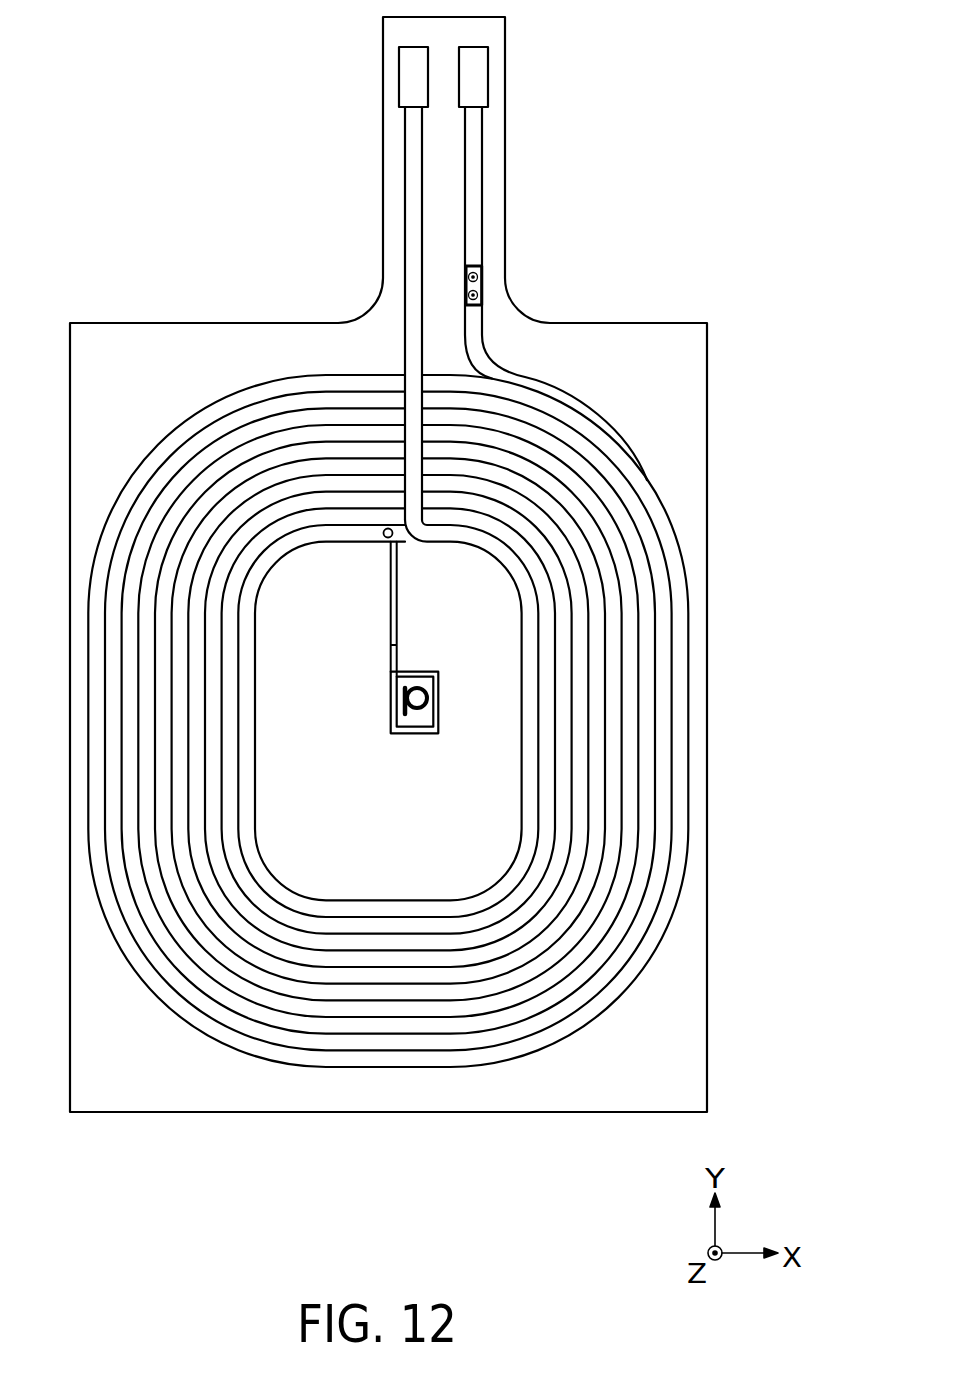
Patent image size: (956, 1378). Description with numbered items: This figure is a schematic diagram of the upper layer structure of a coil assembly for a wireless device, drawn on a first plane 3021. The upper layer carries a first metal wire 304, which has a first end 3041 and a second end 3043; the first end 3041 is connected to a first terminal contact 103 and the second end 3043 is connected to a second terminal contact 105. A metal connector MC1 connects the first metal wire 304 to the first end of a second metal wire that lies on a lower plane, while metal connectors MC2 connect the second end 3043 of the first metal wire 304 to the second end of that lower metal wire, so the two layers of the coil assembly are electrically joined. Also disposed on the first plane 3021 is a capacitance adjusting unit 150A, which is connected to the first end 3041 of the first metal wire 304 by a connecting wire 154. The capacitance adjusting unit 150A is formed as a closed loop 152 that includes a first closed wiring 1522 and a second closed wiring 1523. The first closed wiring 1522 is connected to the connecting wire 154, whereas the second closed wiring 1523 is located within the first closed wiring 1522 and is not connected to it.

The first terminal contact 103 is at (407, 78).
The second terminal contact 105 is at (482, 77).
The first end 3041 is at (411, 170).
The second end 3043 is at (475, 169).
The metal connectors MC2 is at (480, 277).
The metal connector MC1 is at (398, 537).
The first metal wire 304 is at (688, 515).
The first plane 3021 is at (695, 1038).
The capacitance adjusting unit 150A is at (750, 15).
The closed loop 152 is at (391, 755).
The first closed wiring 1522 is at (428, 732).
The second closed wiring 1523 is at (405, 692).
The connecting wire 154 is at (395, 582).